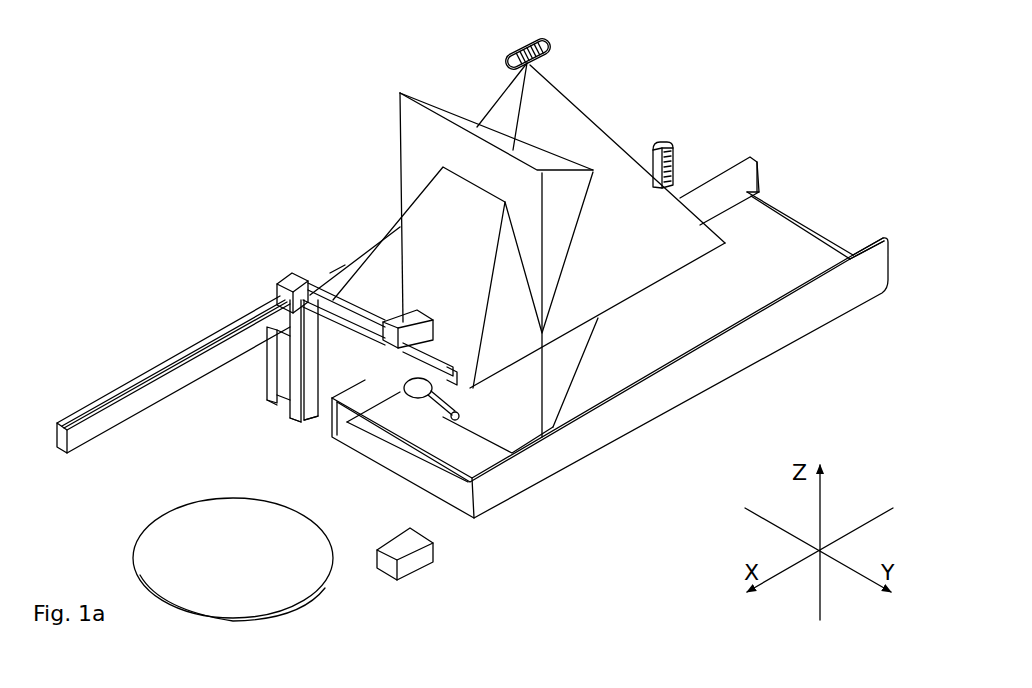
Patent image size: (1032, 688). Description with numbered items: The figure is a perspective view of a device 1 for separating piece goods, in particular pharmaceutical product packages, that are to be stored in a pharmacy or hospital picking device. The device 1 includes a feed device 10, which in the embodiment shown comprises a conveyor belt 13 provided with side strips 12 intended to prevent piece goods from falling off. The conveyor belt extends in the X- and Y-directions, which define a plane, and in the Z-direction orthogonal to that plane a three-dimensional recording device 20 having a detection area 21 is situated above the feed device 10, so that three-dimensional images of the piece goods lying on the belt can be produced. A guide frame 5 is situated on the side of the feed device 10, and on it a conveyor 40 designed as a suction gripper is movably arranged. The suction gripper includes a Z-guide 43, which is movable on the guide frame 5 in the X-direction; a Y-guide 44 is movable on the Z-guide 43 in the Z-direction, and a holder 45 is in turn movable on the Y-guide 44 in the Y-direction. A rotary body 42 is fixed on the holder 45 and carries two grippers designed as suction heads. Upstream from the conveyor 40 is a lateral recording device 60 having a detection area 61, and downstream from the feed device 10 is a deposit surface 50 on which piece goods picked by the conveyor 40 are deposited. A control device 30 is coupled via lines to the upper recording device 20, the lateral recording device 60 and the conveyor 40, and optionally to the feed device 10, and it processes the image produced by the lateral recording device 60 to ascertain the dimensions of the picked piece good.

The device 1 is at (172, 108).
The guide frame 5 is at (330, 273).
The feed device 10 is at (826, 182).
The side strips 12 is at (772, 320).
The conveyor belt 13 is at (773, 248).
The 3D recording device 20 is at (550, 48).
The detection area 21 is at (560, 127).
The control device 30 is at (415, 563).
The conveyor 40 is at (278, 262).
The rotary body 42 is at (440, 405).
The Z-guide 43 is at (285, 332).
The Y-guide 44 is at (297, 350).
The holder 45 is at (405, 330).
The deposit surface 50 is at (227, 567).
The lateral recording device 60 is at (667, 150).
The detection area 61 is at (562, 372).